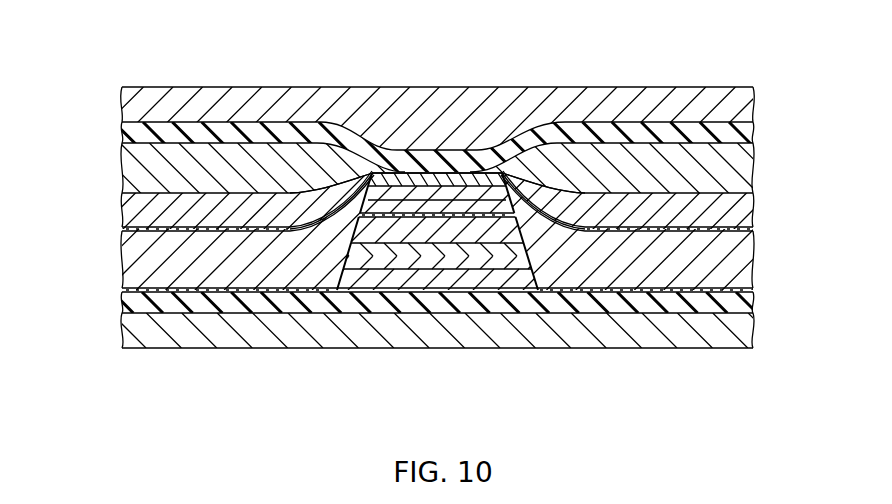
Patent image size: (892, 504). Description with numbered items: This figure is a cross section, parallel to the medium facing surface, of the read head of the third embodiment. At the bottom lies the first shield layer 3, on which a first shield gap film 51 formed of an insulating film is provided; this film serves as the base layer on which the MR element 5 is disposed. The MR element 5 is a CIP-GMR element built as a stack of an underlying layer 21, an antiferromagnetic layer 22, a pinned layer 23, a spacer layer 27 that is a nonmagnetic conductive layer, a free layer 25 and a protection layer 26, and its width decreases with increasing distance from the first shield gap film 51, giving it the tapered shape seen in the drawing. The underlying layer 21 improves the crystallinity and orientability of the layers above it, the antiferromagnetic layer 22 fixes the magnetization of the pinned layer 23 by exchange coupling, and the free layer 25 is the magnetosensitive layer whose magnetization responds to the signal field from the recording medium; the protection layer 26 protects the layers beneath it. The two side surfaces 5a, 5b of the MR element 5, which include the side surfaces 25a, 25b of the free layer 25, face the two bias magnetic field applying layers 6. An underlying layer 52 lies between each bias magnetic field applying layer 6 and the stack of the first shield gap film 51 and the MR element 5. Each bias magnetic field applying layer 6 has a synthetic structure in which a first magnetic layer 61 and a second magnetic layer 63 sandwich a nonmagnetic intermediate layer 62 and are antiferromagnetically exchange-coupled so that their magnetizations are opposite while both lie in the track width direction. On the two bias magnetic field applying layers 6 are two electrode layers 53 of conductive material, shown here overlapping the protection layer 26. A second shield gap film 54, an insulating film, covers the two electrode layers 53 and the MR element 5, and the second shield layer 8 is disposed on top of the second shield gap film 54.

The first shield layer 3 is at (308, 343).
The MR element 5 is at (428, 172).
The side surface of the MR element 5a is at (316, 188).
The side surface of the MR element 5b is at (575, 141).
The bias magnetic field applying layer 6 is at (443, 230).
The second shield layer 8 is at (278, 94).
The underlying layer 21 is at (389, 291).
The antiferromagnetic layer 22 is at (424, 271).
The pinned layer 23 is at (456, 244).
The free layer 25 is at (448, 197).
The side surface of the free layer 25a is at (350, 192).
The side surface of the free layer 25b is at (530, 176).
The protection layer 26 is at (463, 181).
The spacer layer 27 is at (400, 210).
The first shield gap film 51 is at (122, 308).
The underlying layer 52 is at (122, 290).
The electrode layer 53 is at (122, 168).
The second shield gap film 54 is at (122, 130).
The first magnetic layer 61 is at (58, 193).
The nonmagnetic intermediate layer 62 is at (122, 230).
The second magnetic layer 63 is at (122, 215).